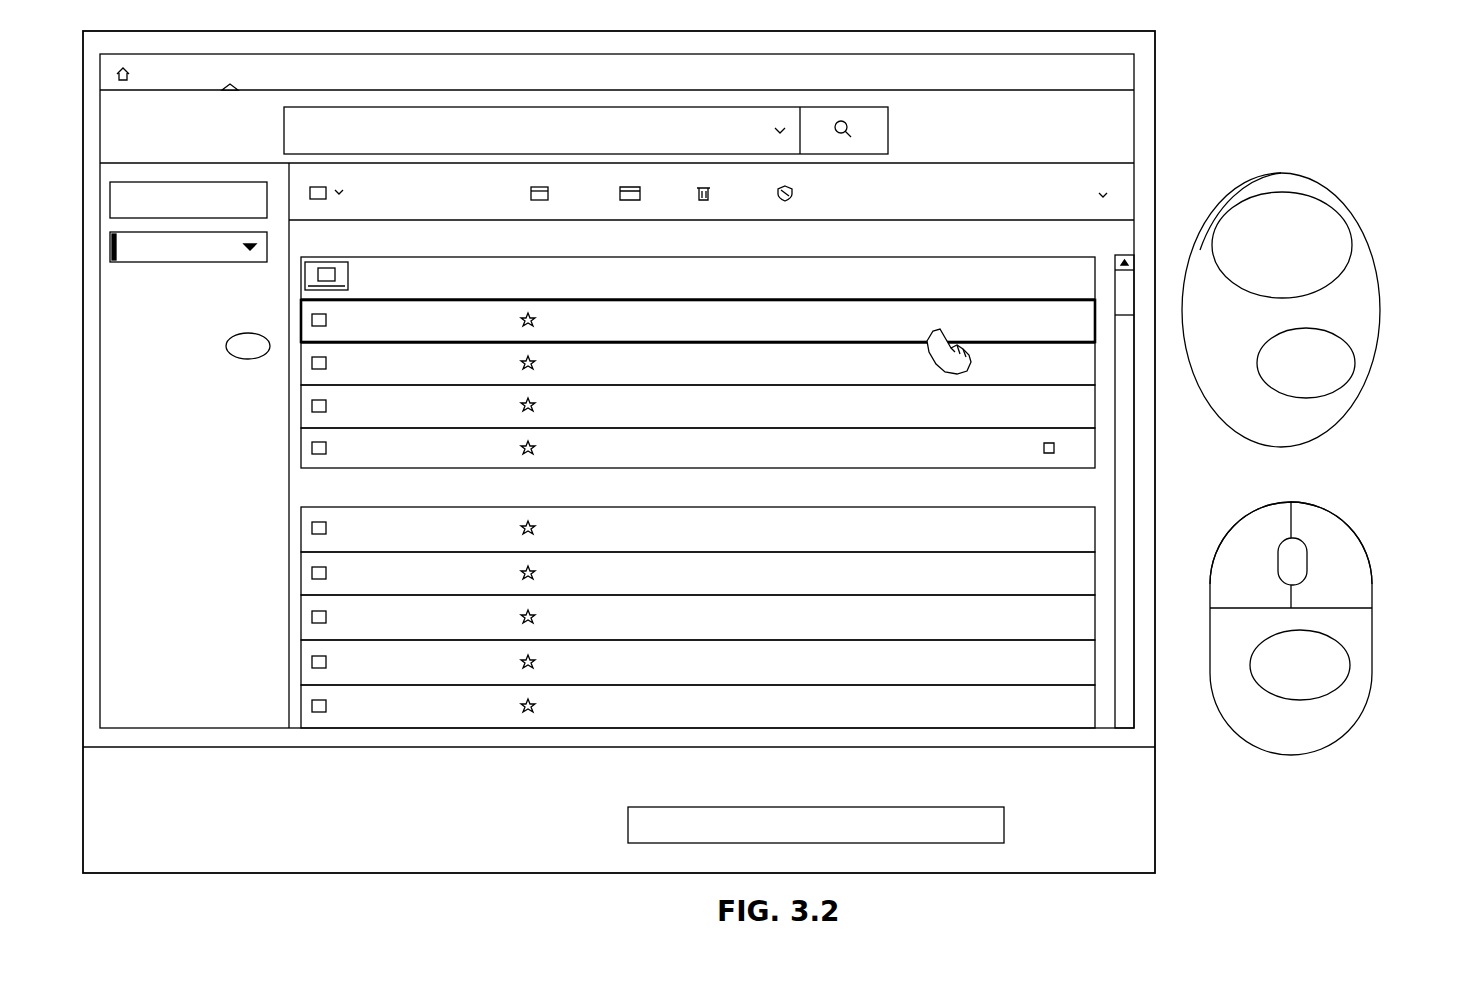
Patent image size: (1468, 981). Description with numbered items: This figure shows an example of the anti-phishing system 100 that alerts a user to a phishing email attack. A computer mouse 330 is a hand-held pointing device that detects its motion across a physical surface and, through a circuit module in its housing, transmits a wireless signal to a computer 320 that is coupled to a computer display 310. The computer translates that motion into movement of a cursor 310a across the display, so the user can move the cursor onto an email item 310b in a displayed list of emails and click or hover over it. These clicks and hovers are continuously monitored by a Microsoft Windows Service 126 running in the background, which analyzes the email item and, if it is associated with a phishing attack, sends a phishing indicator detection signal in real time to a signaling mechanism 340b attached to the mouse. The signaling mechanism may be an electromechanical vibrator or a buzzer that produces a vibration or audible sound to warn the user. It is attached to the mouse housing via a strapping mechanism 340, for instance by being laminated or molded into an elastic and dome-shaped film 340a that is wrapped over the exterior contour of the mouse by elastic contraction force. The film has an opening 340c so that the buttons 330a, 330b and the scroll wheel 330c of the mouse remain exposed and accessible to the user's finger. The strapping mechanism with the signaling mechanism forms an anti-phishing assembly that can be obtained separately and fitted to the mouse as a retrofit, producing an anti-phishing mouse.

The anti-phishing system 100 is at (1201, 67).
The computer display 310 is at (1156, 113).
The computer 320 is at (1156, 843).
The Microsoft Windows Service 126 is at (1005, 826).
The cursor 310a is at (971, 360).
The email item 310b is at (505, 297).
The strapping mechanism 340 is at (1318, 165).
The elastic and dome-shaped film 340a is at (1250, 186).
The signaling mechanism 340b is at (1350, 358).
The opening 340c is at (1322, 201).
The computer mouse 330 is at (1345, 484).
The button 330a is at (1258, 523).
The button 330b is at (1350, 580).
The scroll wheel 330c is at (1308, 570).